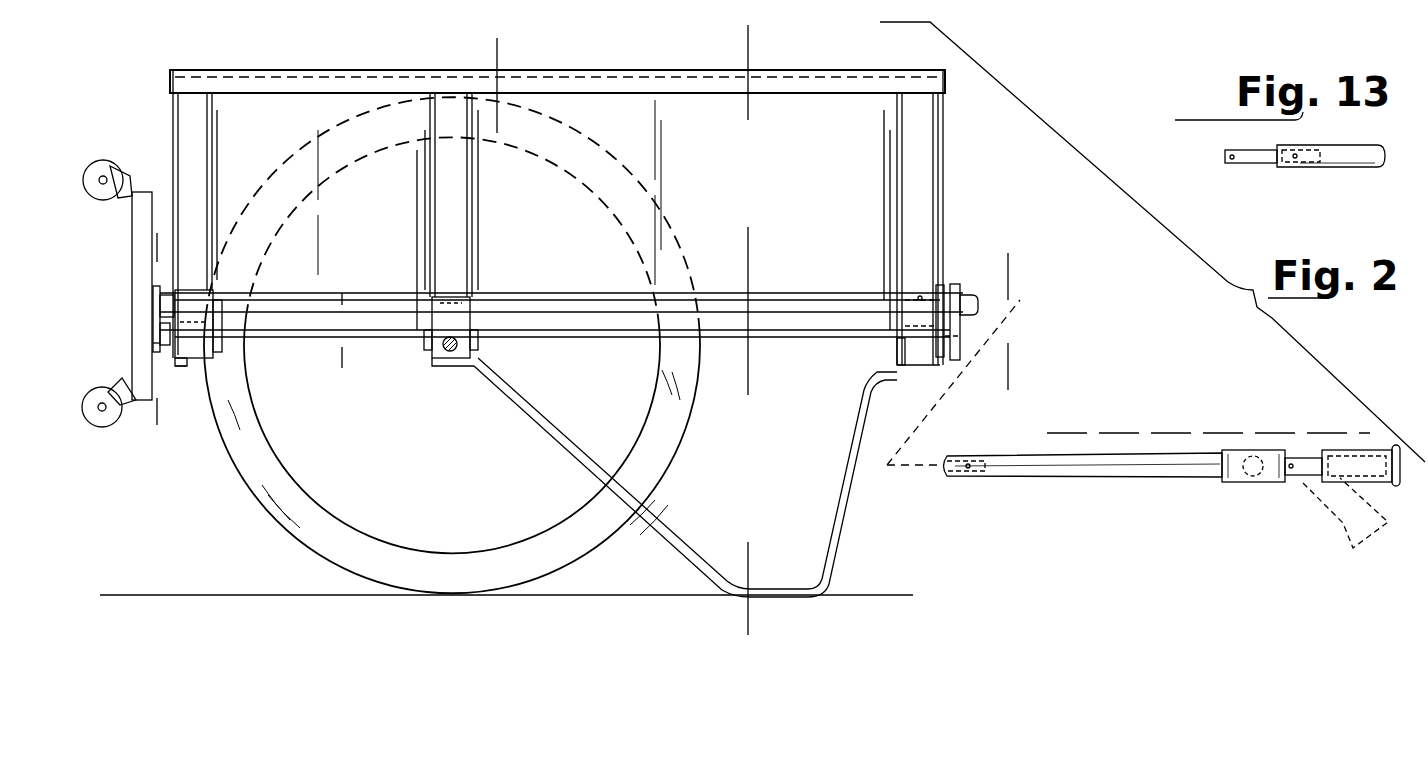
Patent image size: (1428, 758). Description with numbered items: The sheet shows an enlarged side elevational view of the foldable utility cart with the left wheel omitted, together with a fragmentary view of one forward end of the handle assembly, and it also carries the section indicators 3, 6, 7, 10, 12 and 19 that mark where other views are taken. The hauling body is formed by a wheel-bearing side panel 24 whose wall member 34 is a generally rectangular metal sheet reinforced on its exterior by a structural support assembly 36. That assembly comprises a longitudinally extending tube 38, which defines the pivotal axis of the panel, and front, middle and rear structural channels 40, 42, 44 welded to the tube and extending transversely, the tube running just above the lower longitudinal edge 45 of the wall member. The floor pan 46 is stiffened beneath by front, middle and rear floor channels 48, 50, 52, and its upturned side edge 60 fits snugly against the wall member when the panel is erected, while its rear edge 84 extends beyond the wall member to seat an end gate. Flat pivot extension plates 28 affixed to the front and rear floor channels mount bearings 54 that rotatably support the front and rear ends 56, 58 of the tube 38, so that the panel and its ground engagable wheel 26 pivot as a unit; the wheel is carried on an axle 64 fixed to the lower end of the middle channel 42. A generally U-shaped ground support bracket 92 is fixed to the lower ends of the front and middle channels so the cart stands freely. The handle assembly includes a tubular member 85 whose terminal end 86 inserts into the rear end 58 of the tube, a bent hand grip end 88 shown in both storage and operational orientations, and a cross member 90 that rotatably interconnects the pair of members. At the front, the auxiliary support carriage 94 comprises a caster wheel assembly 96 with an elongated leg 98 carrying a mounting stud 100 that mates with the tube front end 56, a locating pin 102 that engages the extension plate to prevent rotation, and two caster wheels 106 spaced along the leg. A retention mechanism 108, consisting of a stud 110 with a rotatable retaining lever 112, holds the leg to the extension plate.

In FIG. 2, the section line 3- 3 is at (724, 52).
In FIG. 2, the section line 6- 6 is at (479, 62).
In FIG. 2, the section line 7- 7 is at (994, 280).
In FIG. 2, the section line 10- 10 is at (373, 319).
In FIG. 2, the section line 12- 12 is at (1083, 448).
In FIG. 2, the section line 19- 19 is at (168, 262).
In FIG. 2, the wheel-bearing side panel 24 is at (800, 66).
In FIG. 2, the ground engagable wheel 26 is at (688, 432).
In FIG. 2, the pivot extension plate 28 is at (152, 327).
In FIG. 2, the wall member 34 is at (815, 188).
In FIG. 2, the structural support assembly 36 is at (935, 133).
In FIG. 2, the tube 38 is at (312, 292).
In FIG. 2, the front structural channel 40 is at (205, 155).
In FIG. 2, the middle structural channel 42 is at (462, 212).
In FIG. 2, the rear structural channel 44 is at (928, 172).
In FIG. 2, the lower longitudinal edge 45 is at (627, 327).
In FIG. 2, the floor pan 46 is at (398, 333).
In FIG. 2, the front floor structural channel 48 is at (223, 345).
In FIG. 2, the middle floor structural channel 50 is at (477, 340).
In FIG. 2, the rear floor structural channel 52 is at (898, 345).
In FIG. 2, the bearing 54 is at (975, 320).
In FIG. 2, the front end of tube 56 is at (173, 300).
In FIG. 2, the rear end of tube 58 is at (947, 290).
In FIG. 2, the upturned side edge 60 is at (568, 337).
In FIG. 2, the axle 64 is at (453, 367).
In FIG. 2, the rear edge of floor pan 84 is at (960, 336).
In FIG. 2, the tubular member 85 is at (1118, 478).
In FIG. 13, the tubular member 85 is at (1342, 172).
In FIG. 2, the terminal end 86 is at (963, 478).
In FIG. 13, the terminal end 86 is at (1268, 165).
In FIG. 2, the bent hand grip end 88 is at (1332, 525).
In FIG. 2, the cross member 90 is at (1235, 482).
In FIG. 2, the ground support bracket 92 is at (846, 548).
In FIG. 2, the auxiliary support carriage 94 is at (147, 112).
In FIG. 2, the caster wheel assembly 96 is at (120, 253).
In FIG. 2, the leg 98 is at (132, 226).
In FIG. 2, the mounting stud 100 is at (153, 313).
In FIG. 2, the locating pin 102 is at (157, 344).
In FIG. 2, the caster wheel 106 is at (103, 160).
In FIG. 2, the retention mechanism 108 is at (181, 400).
In FIG. 2, the stud 110 is at (178, 372).
In FIG. 2, the retaining lever 112 is at (178, 406).